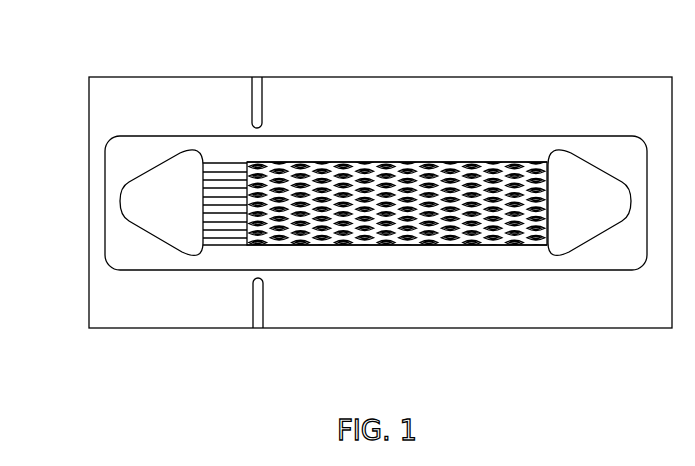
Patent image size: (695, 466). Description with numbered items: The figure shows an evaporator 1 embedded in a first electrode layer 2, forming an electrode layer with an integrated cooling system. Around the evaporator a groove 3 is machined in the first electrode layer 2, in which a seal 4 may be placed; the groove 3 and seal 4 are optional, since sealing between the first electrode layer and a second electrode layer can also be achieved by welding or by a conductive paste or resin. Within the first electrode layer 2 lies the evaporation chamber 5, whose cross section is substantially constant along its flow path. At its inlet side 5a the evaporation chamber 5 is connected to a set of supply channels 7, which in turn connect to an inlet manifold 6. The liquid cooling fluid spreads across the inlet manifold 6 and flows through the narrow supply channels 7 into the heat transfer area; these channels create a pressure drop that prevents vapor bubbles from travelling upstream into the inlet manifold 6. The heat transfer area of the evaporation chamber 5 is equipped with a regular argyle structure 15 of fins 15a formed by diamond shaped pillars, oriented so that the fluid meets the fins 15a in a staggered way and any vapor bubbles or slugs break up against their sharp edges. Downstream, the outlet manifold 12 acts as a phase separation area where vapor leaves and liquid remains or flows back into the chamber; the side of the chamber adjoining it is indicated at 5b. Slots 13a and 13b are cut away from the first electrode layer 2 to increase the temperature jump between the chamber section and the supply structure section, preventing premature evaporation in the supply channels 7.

The evaporator 1 is at (84, 185).
The first electrode layer 2 is at (147, 90).
The groove 3 is at (304, 136).
The seal 4 is at (341, 147).
The evaporation chamber 5 is at (512, 246).
The inlet side 5a is at (313, 248).
The mesh upper edge 5b is at (539, 158).
The inlet manifold 6 is at (160, 224).
The supply channels 7 is at (222, 250).
The outlet manifold 12 is at (578, 240).
The slot 13a is at (260, 328).
The slot 13b is at (258, 94).
The argyle structure 15 is at (378, 248).
The fins 15a is at (374, 161).